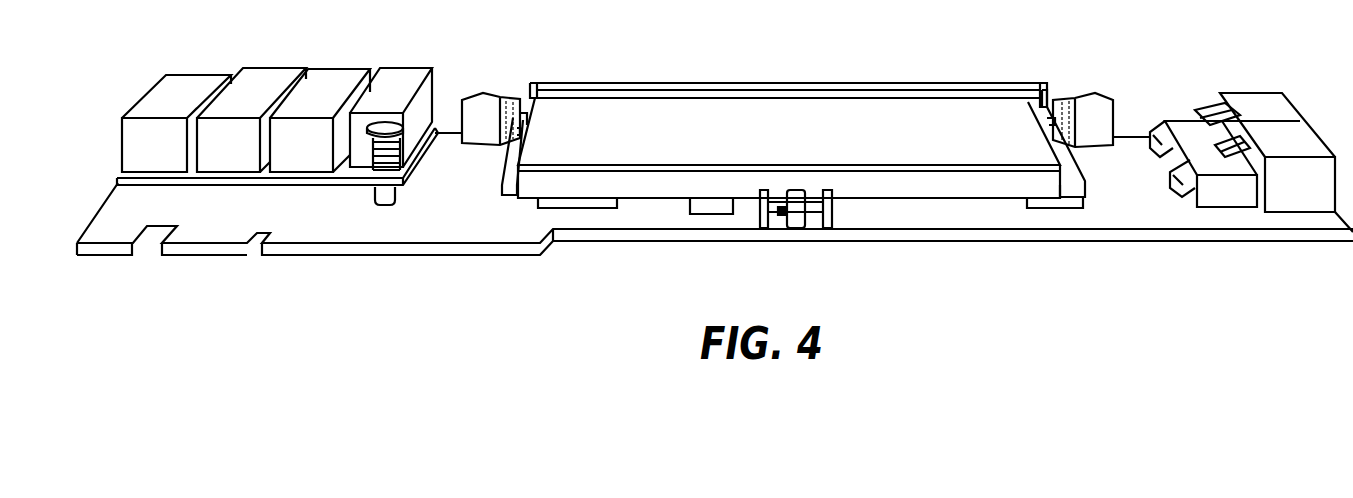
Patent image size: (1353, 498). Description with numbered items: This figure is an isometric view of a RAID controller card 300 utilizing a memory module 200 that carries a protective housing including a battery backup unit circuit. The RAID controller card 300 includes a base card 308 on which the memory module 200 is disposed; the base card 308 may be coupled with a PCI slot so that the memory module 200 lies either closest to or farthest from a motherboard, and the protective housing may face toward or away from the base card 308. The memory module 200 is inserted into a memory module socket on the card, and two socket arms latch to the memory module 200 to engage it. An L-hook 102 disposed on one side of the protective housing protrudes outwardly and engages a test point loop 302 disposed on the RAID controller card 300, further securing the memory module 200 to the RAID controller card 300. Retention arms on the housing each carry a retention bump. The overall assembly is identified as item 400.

The electronic assembly 400 is at (503, 308).
The base card 308 is at (355, 237).
The memory module 200 is at (797, 133).
The L-hook 102 is at (793, 215).
The test point loop 302 is at (807, 212).
The RAID controller card 300 is at (1137, 213).